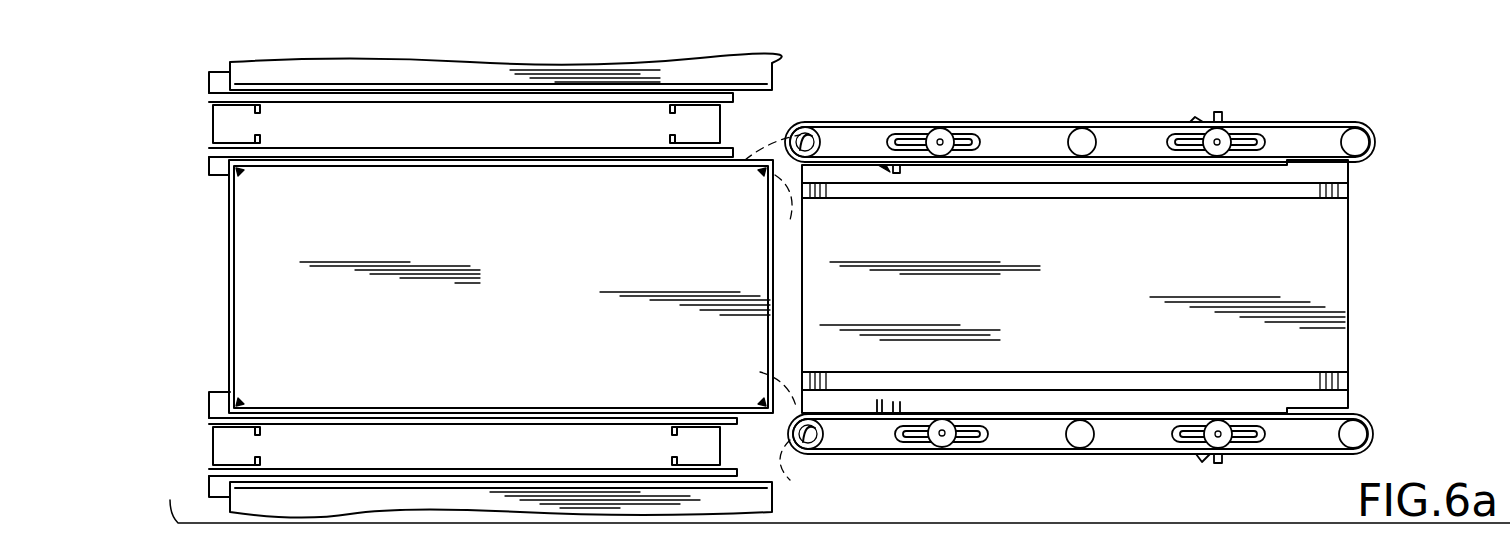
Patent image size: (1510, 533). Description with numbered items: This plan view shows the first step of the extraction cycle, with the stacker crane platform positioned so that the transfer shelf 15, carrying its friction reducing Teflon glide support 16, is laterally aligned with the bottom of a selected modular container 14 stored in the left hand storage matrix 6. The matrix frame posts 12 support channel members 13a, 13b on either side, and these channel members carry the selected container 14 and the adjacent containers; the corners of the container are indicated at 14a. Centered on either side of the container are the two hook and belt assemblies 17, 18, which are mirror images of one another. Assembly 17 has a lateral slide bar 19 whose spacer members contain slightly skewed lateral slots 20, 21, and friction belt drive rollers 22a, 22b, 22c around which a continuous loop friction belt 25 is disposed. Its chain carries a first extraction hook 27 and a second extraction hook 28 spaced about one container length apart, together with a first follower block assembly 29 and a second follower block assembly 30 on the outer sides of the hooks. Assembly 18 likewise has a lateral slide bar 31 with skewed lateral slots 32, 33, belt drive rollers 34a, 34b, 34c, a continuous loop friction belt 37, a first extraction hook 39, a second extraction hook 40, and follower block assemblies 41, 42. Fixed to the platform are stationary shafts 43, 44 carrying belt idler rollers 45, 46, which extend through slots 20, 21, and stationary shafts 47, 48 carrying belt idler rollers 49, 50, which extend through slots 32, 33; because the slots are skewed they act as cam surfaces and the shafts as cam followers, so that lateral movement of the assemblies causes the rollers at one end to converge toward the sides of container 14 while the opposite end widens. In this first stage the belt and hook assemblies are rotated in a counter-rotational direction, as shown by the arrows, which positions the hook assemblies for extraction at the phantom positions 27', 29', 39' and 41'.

The left hand storage matrix 6 is at (782, 99).
The matrix frame posts 12 is at (209, 128).
The channel member 13a is at (209, 166).
The channel member 13b is at (212, 90).
The selected modular container 14 is at (470, 286).
The panel corner 14a is at (242, 170).
The transfer shelf 15 is at (1112, 289).
The friction reducing Teflon glide support 16 is at (1222, 194).
The hook and belt assembly 17 is at (1068, 109).
The hook and belt assembly 18 is at (1031, 466).
The lateral slide bar 19 is at (1122, 132).
The lateral slot 20 is at (966, 152).
The lateral slot 21 is at (1258, 143).
The friction belt drive roller 22a is at (803, 140).
The friction belt drive roller 22b is at (1082, 140).
The friction belt drive roller 22c is at (1357, 142).
The continuous loop friction belt 25 is at (893, 132).
The first extraction hook 27 is at (870, 199).
The first extraction hook (phantom position) 27' is at (722, 167).
The second extraction hook 28 is at (1196, 119).
The first follower block assembly 29 is at (924, 199).
The first follower block assembly (phantom position) 29' is at (748, 212).
The second follower block assembly 30 is at (1219, 114).
The lateral slide bar 31 is at (1018, 460).
The lateral slot 32 is at (968, 426).
The lateral slot 33 is at (1185, 425).
The belt drive roller 34a is at (808, 450).
The belt drive roller 34b is at (1080, 449).
The belt drive roller 34c is at (1356, 434).
The continuous loop friction belt 37 is at (878, 460).
The first extraction hook 39 is at (879, 376).
The first extraction hook (phantom position) 39' is at (799, 478).
The second extraction hook 40 is at (1200, 460).
The follower block assembly 41 is at (915, 376).
The follower block assembly (phantom position) 41' is at (754, 371).
The follower block assembly 42 is at (1216, 462).
The stationary shaft 43 is at (941, 140).
The stationary shaft 44 is at (1213, 146).
The belt idler roller 45 is at (956, 143).
The belt idler roller 46 is at (1220, 152).
The stationary shaft 47 is at (939, 440).
The stationary shaft 48 is at (1222, 442).
The belt idler roller 49 is at (944, 440).
The belt idler roller 50 is at (1226, 440).